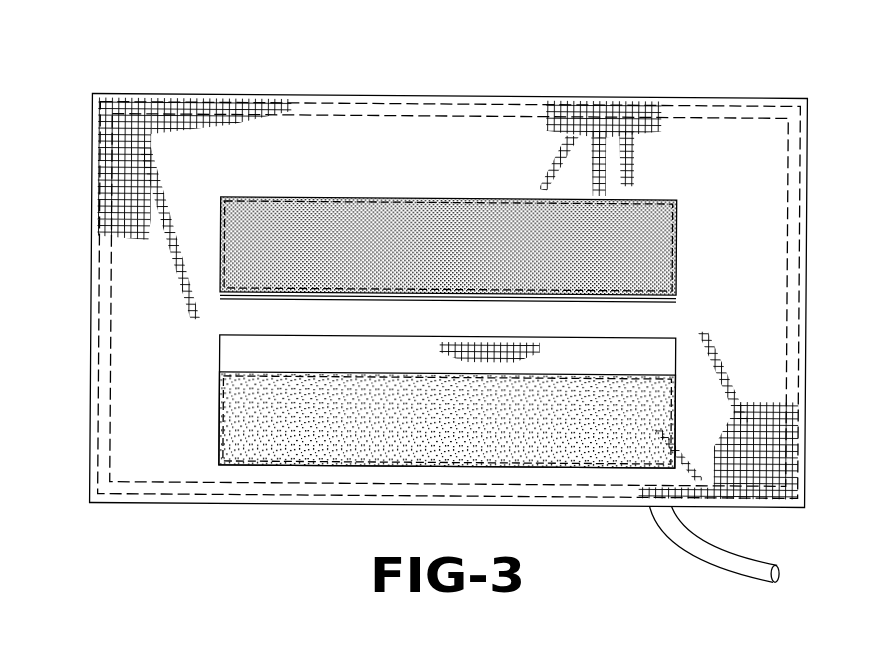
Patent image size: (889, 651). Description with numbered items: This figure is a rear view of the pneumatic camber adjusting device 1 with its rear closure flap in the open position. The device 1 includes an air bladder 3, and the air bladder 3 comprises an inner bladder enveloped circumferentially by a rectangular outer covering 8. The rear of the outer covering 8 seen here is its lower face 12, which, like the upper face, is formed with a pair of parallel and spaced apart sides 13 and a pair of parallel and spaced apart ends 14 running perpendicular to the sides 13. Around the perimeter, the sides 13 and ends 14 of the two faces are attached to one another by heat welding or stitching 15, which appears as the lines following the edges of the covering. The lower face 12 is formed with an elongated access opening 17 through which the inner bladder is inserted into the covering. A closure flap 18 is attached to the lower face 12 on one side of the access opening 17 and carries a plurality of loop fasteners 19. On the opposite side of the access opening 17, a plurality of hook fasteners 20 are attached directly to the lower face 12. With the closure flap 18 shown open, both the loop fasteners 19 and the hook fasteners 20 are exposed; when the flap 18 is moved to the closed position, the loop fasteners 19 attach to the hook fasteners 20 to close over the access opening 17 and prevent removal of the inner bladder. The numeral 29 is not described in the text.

The pneumatic camber adjusting device 1 is at (180, 66).
The air bladder 3 is at (702, 82).
The outer covering 8 is at (465, 122).
The lower face 12 is at (368, 151).
The sides 13 is at (91, 165).
The ends 14 is at (425, 97).
The stitching 15 is at (799, 195).
The access opening 17 is at (661, 302).
The closure flap 18 is at (206, 389).
The loop fasteners 19 is at (250, 425).
The hook fasteners 20 is at (657, 243).
The tube 29 is at (714, 560).